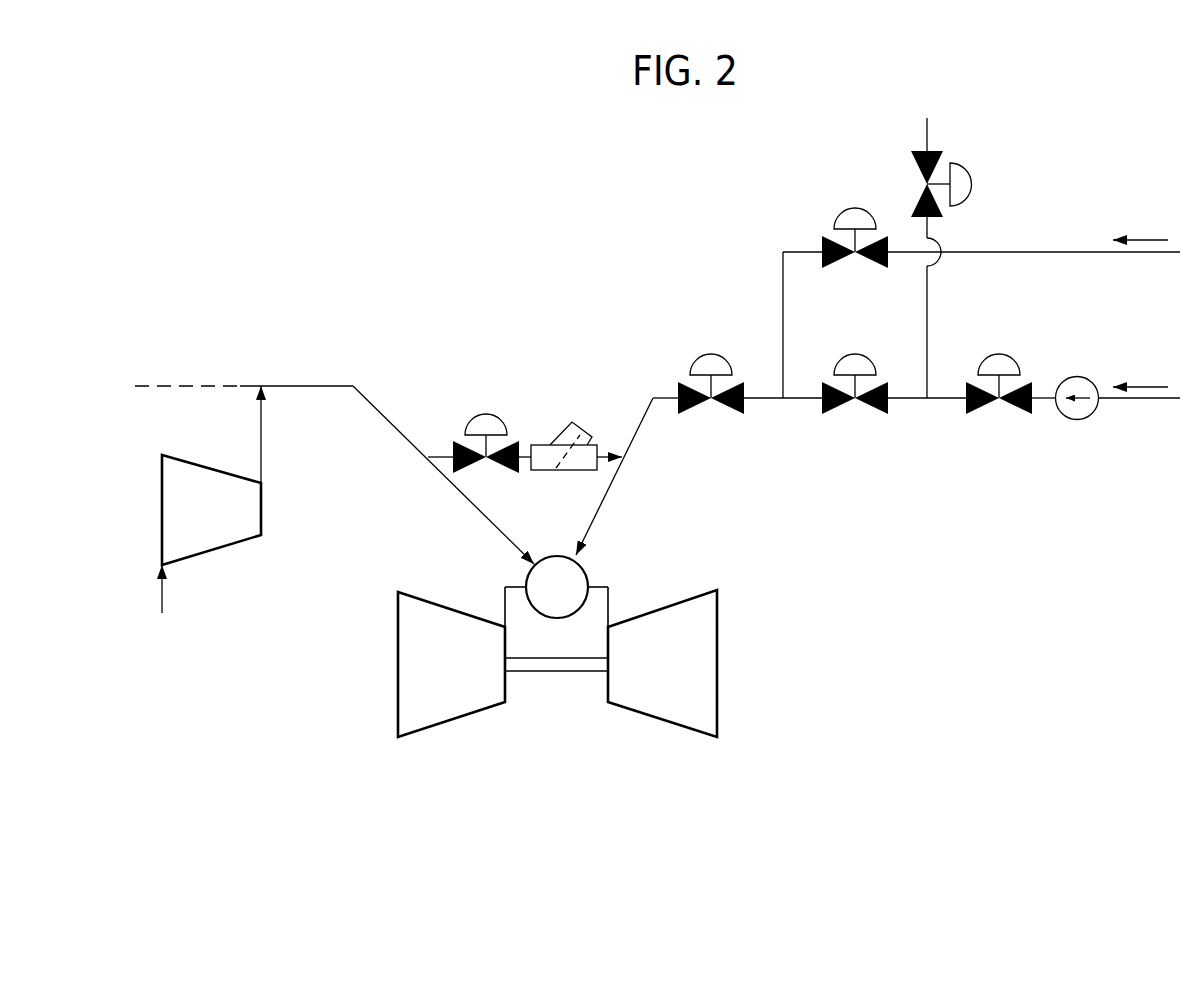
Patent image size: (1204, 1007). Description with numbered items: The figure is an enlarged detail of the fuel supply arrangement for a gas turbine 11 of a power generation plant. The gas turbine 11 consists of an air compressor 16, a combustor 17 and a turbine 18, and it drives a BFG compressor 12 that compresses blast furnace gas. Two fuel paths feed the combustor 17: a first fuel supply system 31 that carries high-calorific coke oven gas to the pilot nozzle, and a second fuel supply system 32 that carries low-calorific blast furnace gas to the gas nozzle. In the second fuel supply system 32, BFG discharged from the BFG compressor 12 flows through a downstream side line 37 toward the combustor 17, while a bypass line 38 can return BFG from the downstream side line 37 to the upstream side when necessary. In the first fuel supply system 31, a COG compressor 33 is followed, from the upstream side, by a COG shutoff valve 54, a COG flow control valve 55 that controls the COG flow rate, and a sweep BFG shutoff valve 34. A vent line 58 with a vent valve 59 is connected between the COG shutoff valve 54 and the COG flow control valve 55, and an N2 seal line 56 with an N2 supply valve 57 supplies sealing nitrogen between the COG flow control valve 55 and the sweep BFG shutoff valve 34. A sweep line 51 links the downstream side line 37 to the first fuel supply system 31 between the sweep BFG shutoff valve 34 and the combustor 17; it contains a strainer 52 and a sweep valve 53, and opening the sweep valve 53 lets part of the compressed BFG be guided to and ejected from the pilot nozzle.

The gas turbine 11 is at (586, 654).
The BFG compressor 12 is at (206, 556).
The air compressor 16 is at (456, 718).
The combustor 17 is at (595, 567).
The turbine 18 is at (652, 718).
The first fuel supply system 31 is at (910, 452).
The second fuel supply system 32 is at (430, 297).
The COG compressor 33 is at (1077, 420).
The sweep BFG shutoff valve 34 is at (711, 353).
The downstream side line 37 is at (300, 386).
The bypass line 38 is at (185, 385).
The sweep line 51 is at (523, 442).
The strainer 52 is at (575, 422).
The sweep valve 53 is at (483, 414).
The COG shutoff valve 54 is at (999, 353).
The COG flow control valve 55 is at (855, 353).
The N2 seal line 56 is at (783, 254).
The N2 supply valve 57 is at (857, 207).
The vent line 58 is at (930, 130).
The vent valve 59 is at (975, 182).